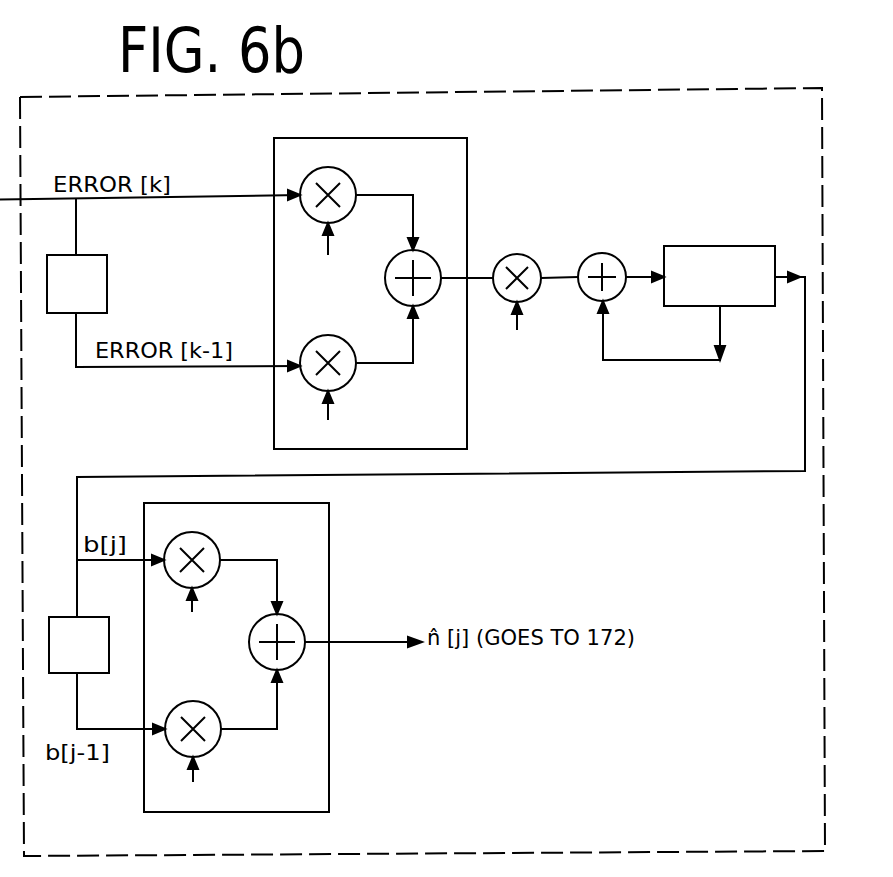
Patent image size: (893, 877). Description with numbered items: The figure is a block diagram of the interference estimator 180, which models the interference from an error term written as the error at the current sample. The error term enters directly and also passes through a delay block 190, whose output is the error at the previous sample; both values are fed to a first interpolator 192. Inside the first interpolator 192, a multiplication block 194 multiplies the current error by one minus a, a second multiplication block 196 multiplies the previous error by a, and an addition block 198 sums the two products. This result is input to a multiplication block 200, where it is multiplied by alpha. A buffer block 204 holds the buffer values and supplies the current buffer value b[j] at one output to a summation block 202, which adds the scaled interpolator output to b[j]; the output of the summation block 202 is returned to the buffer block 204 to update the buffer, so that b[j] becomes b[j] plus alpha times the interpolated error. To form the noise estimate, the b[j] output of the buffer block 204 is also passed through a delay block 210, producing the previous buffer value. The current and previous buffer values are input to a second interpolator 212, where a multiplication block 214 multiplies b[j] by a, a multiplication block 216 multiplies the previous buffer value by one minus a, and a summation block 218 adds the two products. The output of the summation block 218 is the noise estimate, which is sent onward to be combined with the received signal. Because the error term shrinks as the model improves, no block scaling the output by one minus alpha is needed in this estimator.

The interference estimator 180 is at (668, 88).
The delay block 190 is at (107, 282).
The first interpolator 192 is at (467, 168).
The multiplication block 194 is at (352, 184).
The multiplication block 196 is at (350, 378).
The addition block 198 is at (386, 292).
The multiplication block 200 is at (530, 258).
The summation block 202 is at (604, 253).
The buffer block 204 is at (708, 246).
The delay block 210 is at (60, 617).
The second interpolator 212 is at (329, 518).
The multiplication block 214 is at (216, 547).
The multiplication block 216 is at (216, 743).
The summation block 218 is at (254, 660).